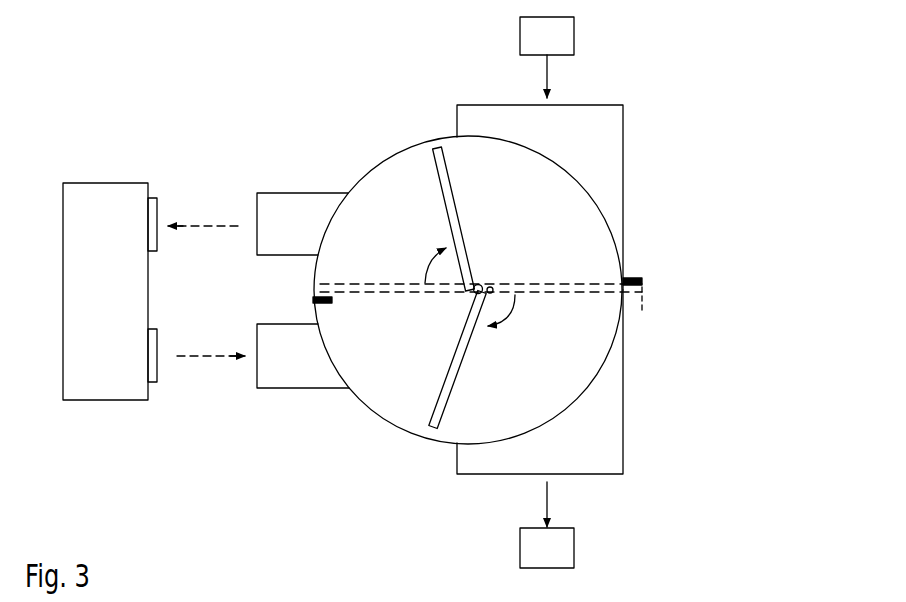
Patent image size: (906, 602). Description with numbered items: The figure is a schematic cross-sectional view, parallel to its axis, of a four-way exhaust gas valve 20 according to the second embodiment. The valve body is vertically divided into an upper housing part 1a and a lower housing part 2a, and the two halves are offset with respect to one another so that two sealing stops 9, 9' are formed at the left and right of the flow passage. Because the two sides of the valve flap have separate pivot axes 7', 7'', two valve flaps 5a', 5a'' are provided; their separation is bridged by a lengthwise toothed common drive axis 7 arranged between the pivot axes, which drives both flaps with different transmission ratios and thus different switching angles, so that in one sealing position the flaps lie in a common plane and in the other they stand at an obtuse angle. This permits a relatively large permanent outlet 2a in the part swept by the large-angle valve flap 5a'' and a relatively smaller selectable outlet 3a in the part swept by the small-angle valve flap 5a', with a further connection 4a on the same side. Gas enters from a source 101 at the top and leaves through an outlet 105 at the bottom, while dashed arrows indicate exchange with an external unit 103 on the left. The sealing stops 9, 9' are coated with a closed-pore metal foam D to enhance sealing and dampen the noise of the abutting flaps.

The four-way exhaust gas valve 20 is at (718, 157).
The first housing part 1a is at (623, 147).
The permanent outlet 2a is at (623, 432).
The selectable outlet 3a is at (292, 192).
The second connection channel 4a is at (289, 389).
The valve flap 5a' is at (473, 219).
The valve flap 5a'' is at (474, 360).
The common drive axis 7 is at (488, 260).
The pivot axis 7' is at (447, 290).
The pivot axis 7'' is at (516, 322).
The sealing stop 9 is at (656, 290).
The sealing stop 9' is at (285, 305).
The closed-pore metal foam D is at (318, 297).
The inlet 101 is at (547, 57).
The external unit 103 is at (110, 291).
The outlet 105 is at (547, 525).